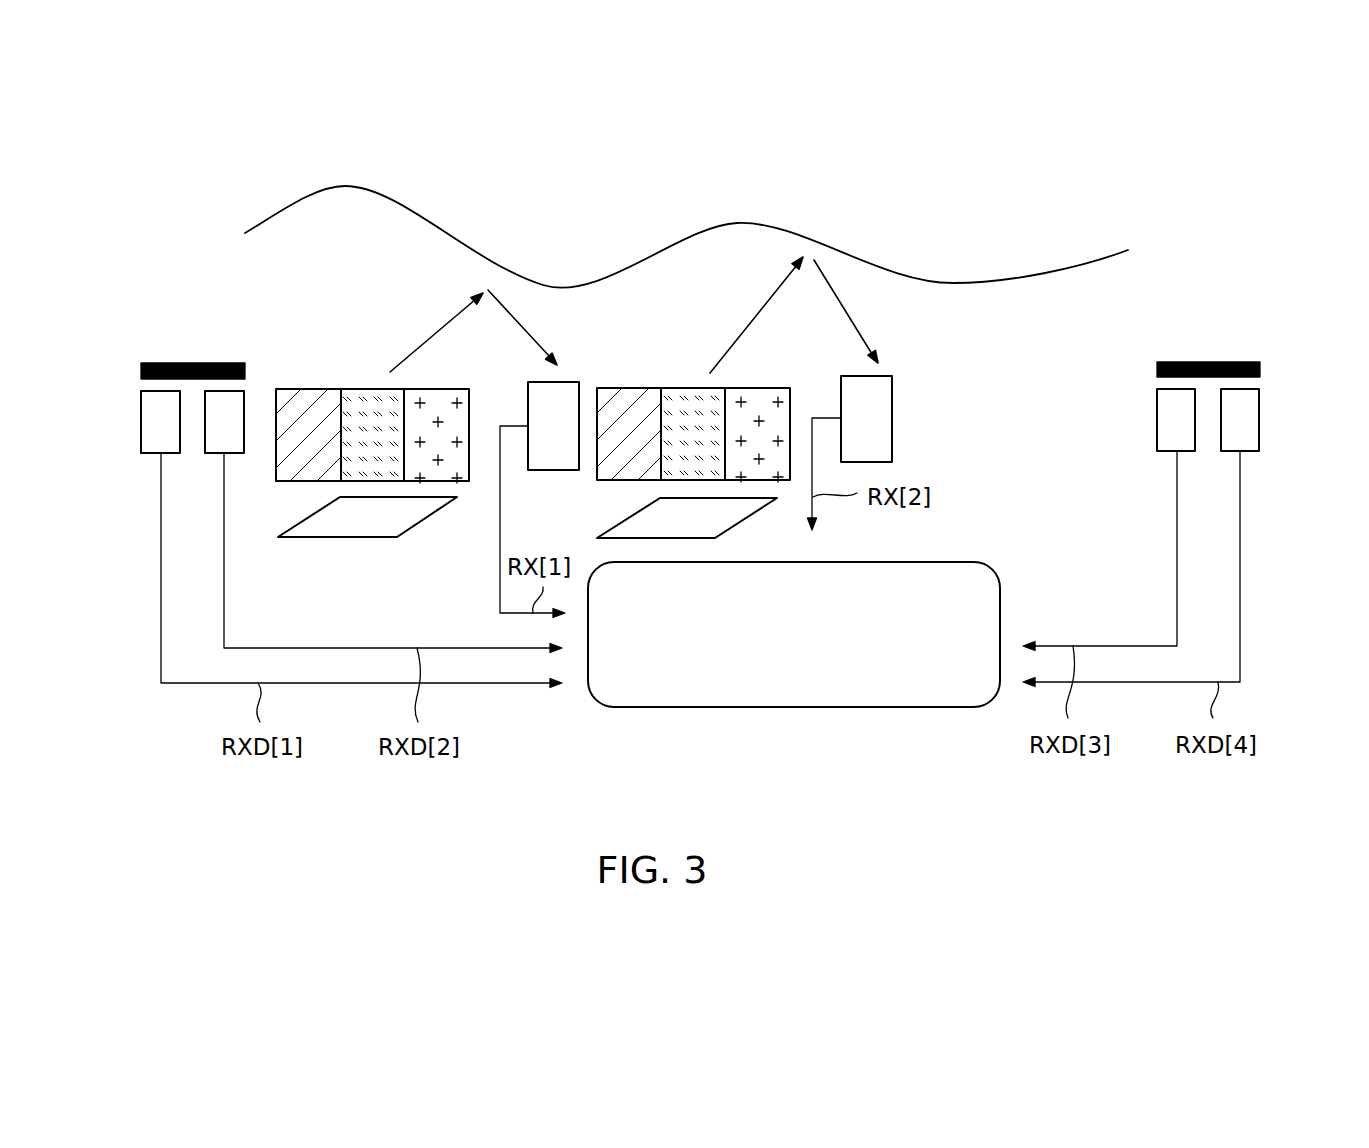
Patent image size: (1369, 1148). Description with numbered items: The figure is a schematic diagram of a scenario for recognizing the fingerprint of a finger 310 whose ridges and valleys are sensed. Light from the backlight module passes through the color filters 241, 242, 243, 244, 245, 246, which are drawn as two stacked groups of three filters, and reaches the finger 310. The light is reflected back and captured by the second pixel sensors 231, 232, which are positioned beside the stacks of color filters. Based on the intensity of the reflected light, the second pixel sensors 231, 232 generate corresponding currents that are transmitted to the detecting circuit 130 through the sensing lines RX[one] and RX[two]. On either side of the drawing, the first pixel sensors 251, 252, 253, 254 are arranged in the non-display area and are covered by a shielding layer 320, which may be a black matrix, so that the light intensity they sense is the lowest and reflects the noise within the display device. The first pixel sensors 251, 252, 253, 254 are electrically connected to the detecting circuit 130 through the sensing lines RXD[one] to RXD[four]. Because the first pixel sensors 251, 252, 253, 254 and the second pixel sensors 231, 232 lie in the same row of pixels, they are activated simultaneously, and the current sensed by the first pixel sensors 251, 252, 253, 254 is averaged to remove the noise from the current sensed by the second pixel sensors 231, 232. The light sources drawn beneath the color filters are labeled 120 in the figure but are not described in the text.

The finger 310 is at (427, 227).
The light source 120 is at (340, 537).
The detecting circuit 130 is at (795, 707).
The second pixel sensor 231 is at (570, 382).
The second pixel sensor 232 is at (892, 376).
The color filter 241 is at (308, 389).
The color filter 242 is at (375, 389).
The color filter 243 is at (443, 389).
The color filter 244 is at (630, 388).
The color filter 245 is at (697, 388).
The color filter 246 is at (765, 388).
The first pixel sensor 251 is at (141, 422).
The first pixel sensor 252 is at (213, 453).
The first pixel sensor 253 is at (1157, 422).
The first pixel sensor 254 is at (1259, 422).
The shielding layer 320 is at (141, 372).